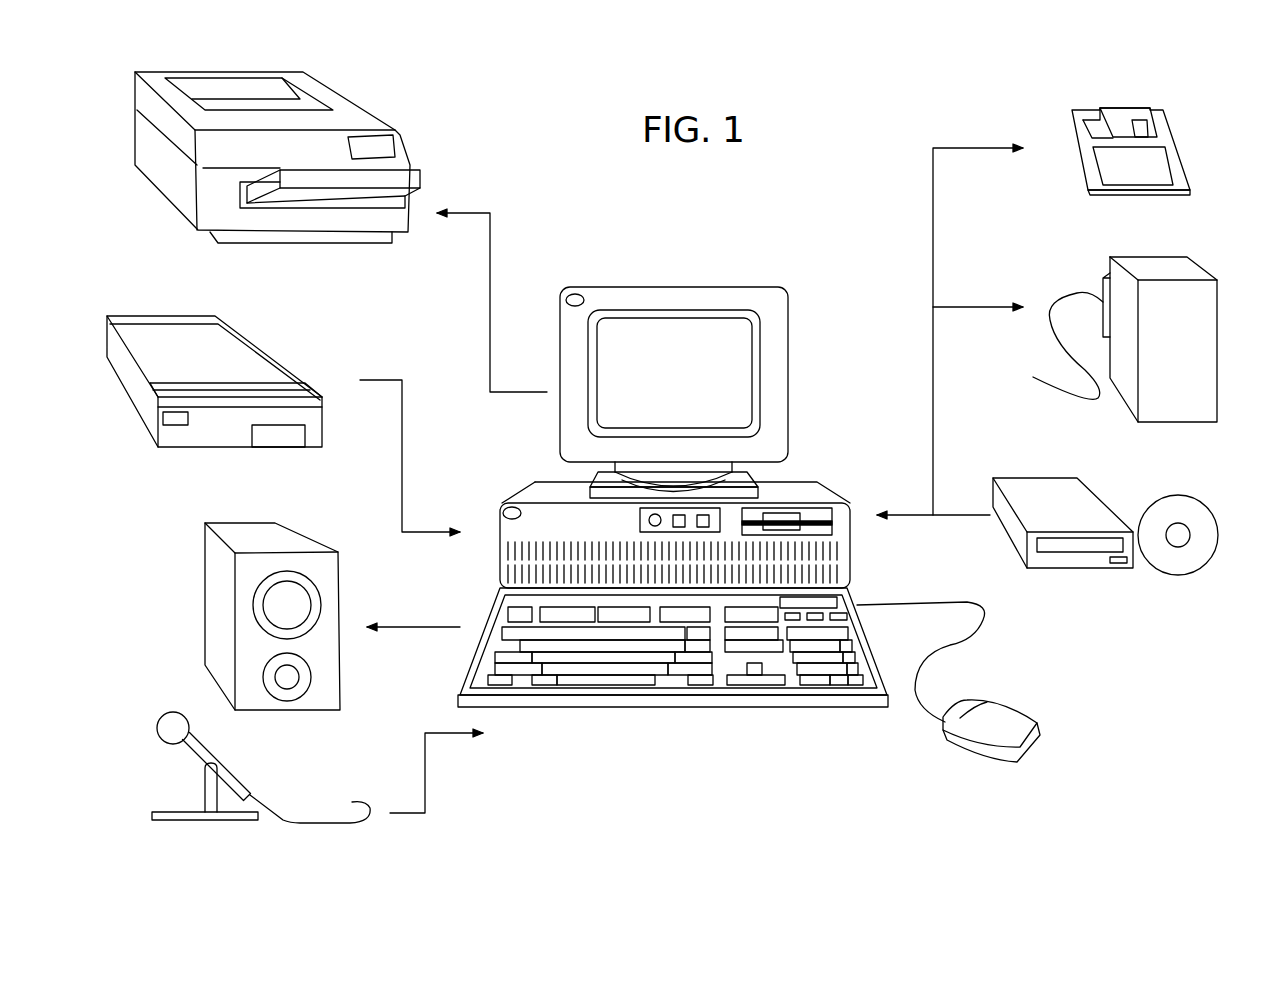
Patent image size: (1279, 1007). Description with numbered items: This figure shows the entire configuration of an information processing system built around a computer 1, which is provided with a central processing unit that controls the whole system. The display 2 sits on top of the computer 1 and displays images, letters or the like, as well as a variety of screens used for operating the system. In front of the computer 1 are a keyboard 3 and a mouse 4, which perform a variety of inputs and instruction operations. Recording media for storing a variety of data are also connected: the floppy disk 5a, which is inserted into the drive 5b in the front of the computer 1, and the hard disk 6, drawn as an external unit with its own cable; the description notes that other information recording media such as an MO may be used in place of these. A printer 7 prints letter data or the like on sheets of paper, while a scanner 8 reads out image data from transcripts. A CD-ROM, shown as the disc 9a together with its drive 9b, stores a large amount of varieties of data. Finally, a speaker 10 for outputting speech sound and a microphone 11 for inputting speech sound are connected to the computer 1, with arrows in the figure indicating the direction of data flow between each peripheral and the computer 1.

The computer 1 is at (500, 533).
The display 2 is at (557, 363).
The keyboard 3 is at (490, 617).
The mouse 4 is at (983, 730).
The floppy disk 5a is at (1162, 167).
The floppy disk drive 5b is at (817, 513).
The hard disk 6 is at (1177, 268).
The printer 7 is at (363, 117).
The scanner 8 is at (252, 362).
The CD-ROM disc 9a is at (1200, 510).
The CD-ROM drive 9b is at (1047, 495).
The speaker 10 is at (273, 535).
The microphone 11 is at (240, 775).